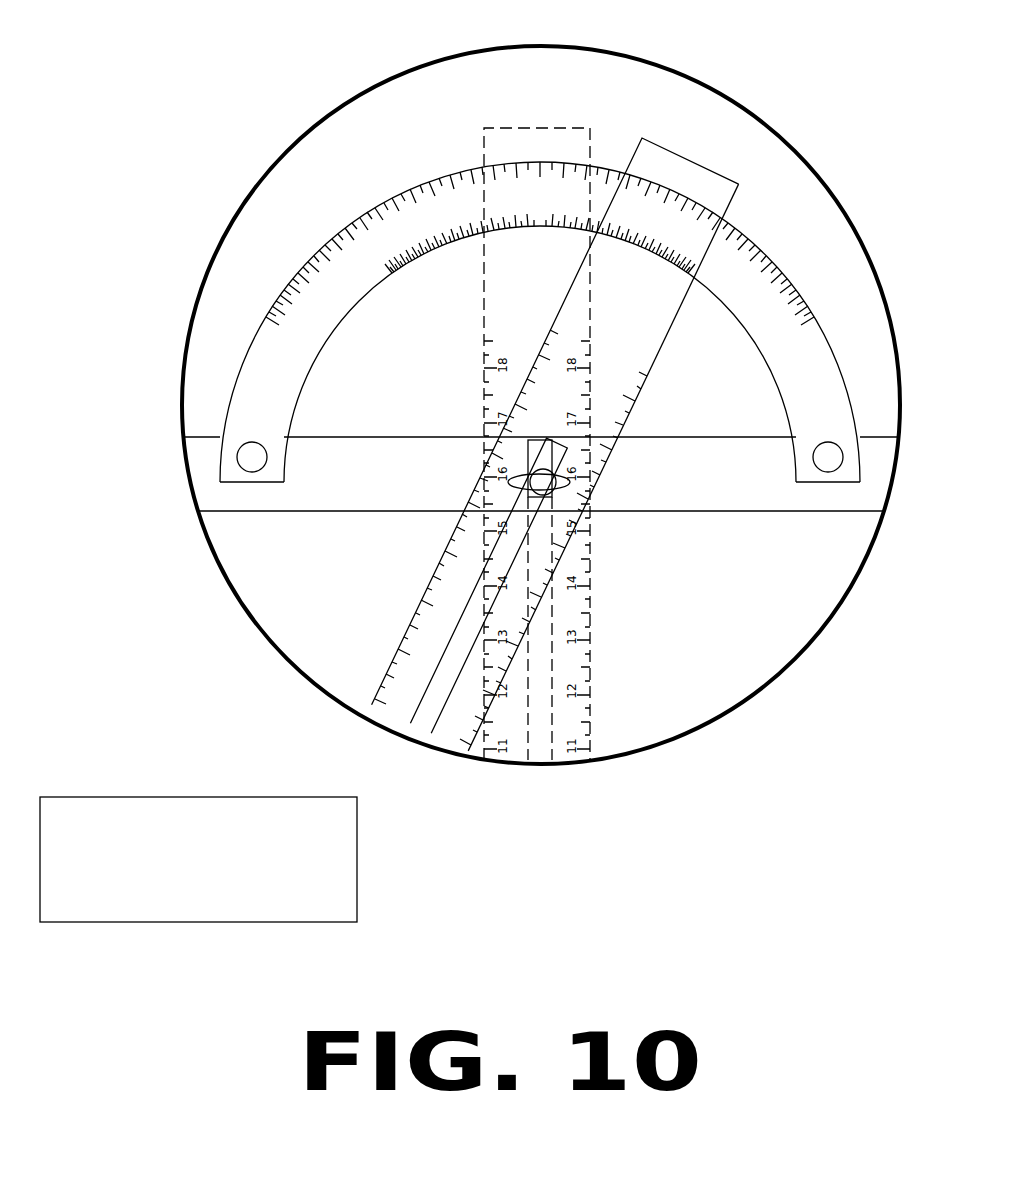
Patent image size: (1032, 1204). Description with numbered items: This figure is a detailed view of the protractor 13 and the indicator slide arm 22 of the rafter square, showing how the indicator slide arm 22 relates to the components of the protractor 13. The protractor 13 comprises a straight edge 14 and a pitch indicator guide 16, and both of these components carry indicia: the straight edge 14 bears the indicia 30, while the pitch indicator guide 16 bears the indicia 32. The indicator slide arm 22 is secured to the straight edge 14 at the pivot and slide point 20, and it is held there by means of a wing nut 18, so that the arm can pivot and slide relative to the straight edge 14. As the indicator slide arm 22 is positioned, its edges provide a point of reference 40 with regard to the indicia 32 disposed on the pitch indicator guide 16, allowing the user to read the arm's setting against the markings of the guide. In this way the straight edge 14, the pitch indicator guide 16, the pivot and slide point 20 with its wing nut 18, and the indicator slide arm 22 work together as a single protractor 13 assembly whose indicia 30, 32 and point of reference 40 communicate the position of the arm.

The protractor 13 is at (258, 246).
The pitch indicator guide 16 is at (372, 212).
The indicia of pitch indicator guide 32 is at (280, 324).
The straight edge 14 is at (432, 437).
The point of reference 40 is at (740, 213).
The indicator slide arm 22 is at (646, 378).
The pivot and slide point 20 is at (523, 475).
The wing nut 18 is at (555, 478).
The indicia of straight edge 30 is at (222, 497).